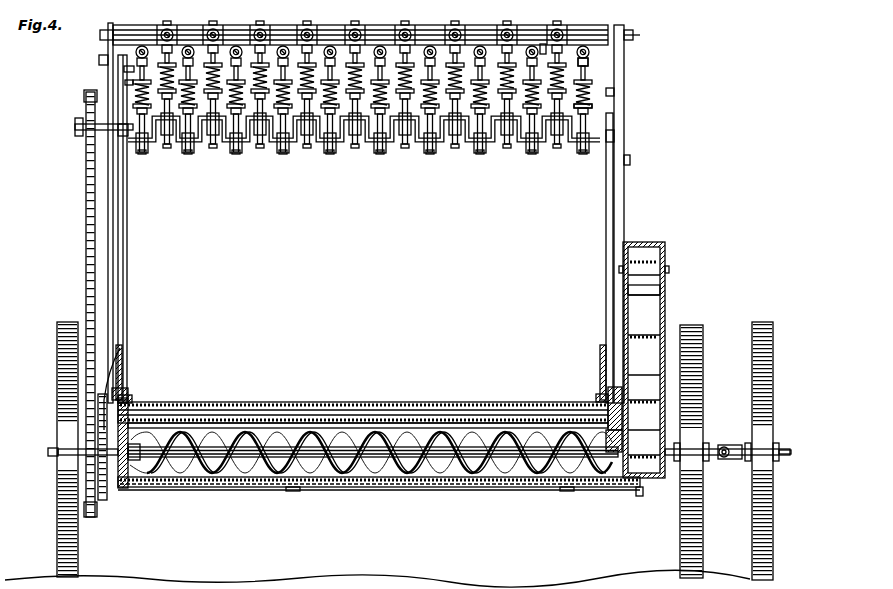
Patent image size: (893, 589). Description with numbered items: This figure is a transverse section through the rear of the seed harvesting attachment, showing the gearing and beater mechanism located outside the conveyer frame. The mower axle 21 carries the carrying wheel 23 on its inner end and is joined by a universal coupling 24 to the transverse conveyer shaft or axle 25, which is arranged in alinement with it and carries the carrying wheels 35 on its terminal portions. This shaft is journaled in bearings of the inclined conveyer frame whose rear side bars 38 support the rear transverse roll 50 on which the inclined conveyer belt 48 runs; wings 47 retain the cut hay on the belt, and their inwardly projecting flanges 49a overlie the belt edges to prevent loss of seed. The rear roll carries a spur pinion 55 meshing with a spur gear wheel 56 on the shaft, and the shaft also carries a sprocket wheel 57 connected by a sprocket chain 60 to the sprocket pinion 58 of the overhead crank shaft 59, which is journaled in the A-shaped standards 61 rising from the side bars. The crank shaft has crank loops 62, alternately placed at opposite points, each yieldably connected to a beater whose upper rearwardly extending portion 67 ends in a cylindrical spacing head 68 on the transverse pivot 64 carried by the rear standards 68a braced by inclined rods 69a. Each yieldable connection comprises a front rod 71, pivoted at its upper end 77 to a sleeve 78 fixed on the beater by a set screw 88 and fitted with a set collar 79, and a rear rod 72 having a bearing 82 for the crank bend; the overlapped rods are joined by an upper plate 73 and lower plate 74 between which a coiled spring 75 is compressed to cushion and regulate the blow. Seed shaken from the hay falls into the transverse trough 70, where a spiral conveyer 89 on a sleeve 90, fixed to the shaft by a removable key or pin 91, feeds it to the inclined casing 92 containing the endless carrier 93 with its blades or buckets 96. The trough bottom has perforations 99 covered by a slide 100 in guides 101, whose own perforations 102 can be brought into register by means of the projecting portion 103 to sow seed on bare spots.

The transverse shaft or axle 21 is at (785, 449).
The carrying wheel 23 is at (762, 322).
The universal coupling 24 is at (728, 445).
The transverse conveyer shaft or axle 25 is at (48, 452).
The carrying wheels 35 is at (57, 368).
The rear side bars 38 is at (128, 390).
The wings 47 is at (123, 356).
The inclined conveyer belt 48 is at (400, 403).
The inwardly projecting flanges 49a is at (130, 398).
The rear transverse roll 50 is at (460, 412).
The spur pinion 55 is at (120, 350).
The spur gear wheel 56 is at (108, 500).
The sprocket wheel 57 is at (92, 517).
The sprocket pinion 58 is at (86, 132).
The overhead crank shaft 59 is at (124, 136).
The sprocket chain 60 is at (86, 242).
The A-shaped standards 61 is at (128, 210).
The crank loops 62 is at (255, 142).
The rear transverse shaft or pivot 64 is at (105, 40).
The upper rearwardly extending portion 67 is at (257, 30).
The head 68 is at (170, 25).
The rear standards 68a is at (104, 62).
The inclined rods 69a is at (128, 80).
The transverse trough 70 is at (252, 472).
The vertical rod 71 is at (142, 72).
The rear vertical rod 72 is at (170, 140).
The upper plate 73 is at (596, 84).
The lower plate 74 is at (600, 112).
The coiled spring 75 is at (216, 120).
The upper end 77 is at (600, 60).
The sleeve 78 is at (410, 32).
The set collar 79 is at (545, 50).
The bearing 82 is at (428, 150).
The set screw 88 is at (358, 30).
The spiral conveyer 89 is at (305, 440).
The sleeve 90 is at (346, 460).
The removable key or pin 91 is at (160, 458).
The inclined casing 92 is at (666, 293).
The endless carrier 93 is at (648, 265).
The blades or buckets 96 is at (644, 296).
The perforations 99 is at (370, 482).
The slide 100 is at (421, 478).
The guides 101 is at (495, 487).
The perforations 102 is at (296, 491).
The projecting portion 103 is at (638, 496).